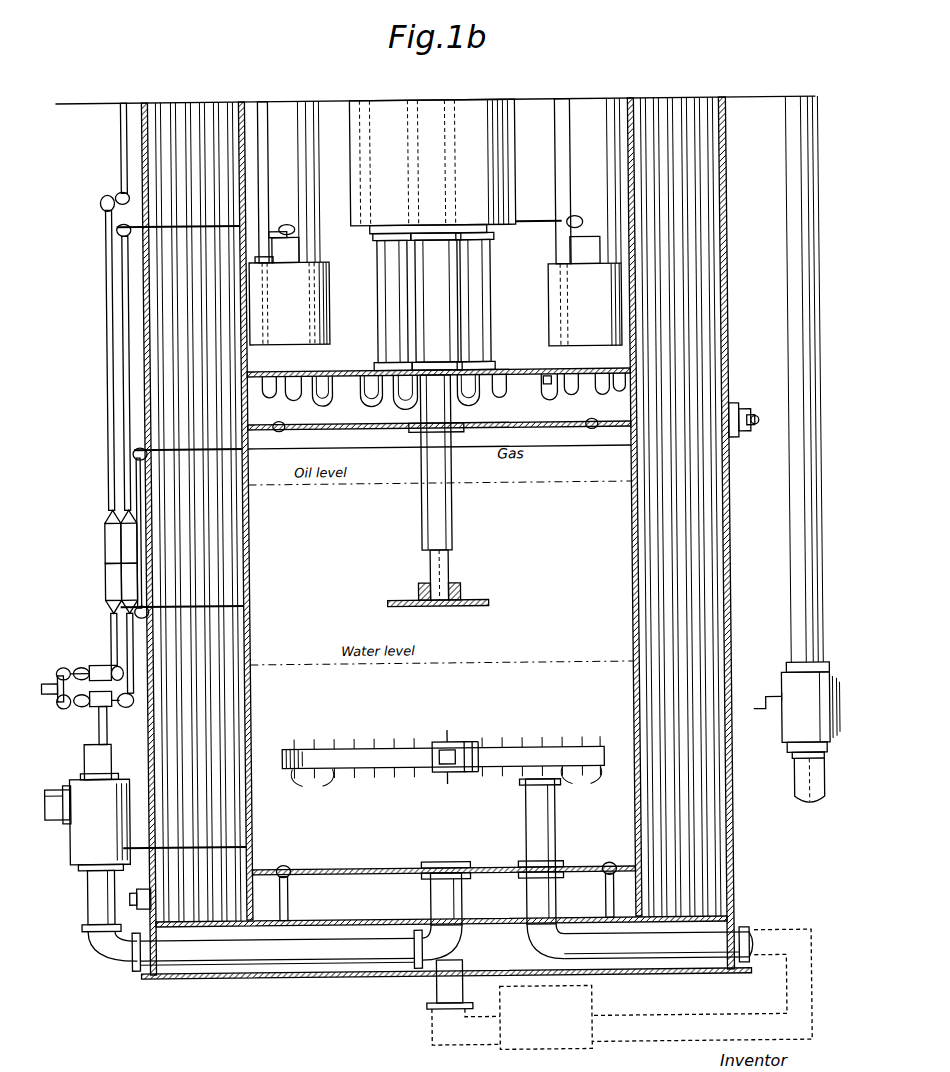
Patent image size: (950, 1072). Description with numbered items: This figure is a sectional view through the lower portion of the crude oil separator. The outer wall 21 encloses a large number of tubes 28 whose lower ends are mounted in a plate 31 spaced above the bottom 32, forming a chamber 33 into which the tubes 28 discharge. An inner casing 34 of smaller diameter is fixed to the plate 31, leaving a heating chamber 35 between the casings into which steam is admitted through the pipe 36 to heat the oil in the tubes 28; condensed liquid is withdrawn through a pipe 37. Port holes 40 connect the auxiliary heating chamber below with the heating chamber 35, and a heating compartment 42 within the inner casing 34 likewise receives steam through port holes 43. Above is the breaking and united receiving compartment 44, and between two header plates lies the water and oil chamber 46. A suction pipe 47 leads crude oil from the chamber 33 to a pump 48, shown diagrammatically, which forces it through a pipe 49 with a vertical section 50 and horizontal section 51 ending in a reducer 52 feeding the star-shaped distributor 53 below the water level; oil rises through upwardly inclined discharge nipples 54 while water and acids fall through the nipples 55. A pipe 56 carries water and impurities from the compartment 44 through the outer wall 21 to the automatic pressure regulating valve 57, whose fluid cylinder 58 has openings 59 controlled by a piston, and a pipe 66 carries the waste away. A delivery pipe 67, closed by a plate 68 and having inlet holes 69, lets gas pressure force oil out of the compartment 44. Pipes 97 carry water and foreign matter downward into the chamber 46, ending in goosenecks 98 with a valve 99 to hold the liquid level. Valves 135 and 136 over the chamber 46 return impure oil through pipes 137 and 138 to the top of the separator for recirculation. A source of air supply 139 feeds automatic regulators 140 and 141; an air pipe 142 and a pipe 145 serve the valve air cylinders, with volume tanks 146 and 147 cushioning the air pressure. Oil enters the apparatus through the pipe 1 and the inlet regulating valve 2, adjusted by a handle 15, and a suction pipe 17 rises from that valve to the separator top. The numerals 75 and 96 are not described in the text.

The pipe 1 is at (800, 785).
The inlet regulating valve 2 is at (790, 732).
The handle 15 is at (758, 708).
The suction pipe 17 is at (790, 530).
The outer wall 21 is at (727, 118).
The tubes 28 is at (665, 200).
The plate 31 is at (345, 918).
The bottom 32 is at (240, 980).
The chamber 33 is at (320, 965).
The inner casing 34 is at (249, 540).
The heating chamber 35 is at (158, 492).
The pipe 36 is at (750, 412).
The pipe 37 is at (130, 896).
The port holes 40 is at (255, 900).
The heating compartment 42 is at (590, 112).
The port holes 43 is at (242, 365).
The breaking and united receiving compartment 44 is at (590, 505).
The water and oil chamber 46 is at (320, 408).
The suction pipe 47 is at (337, 325).
The pump 48 is at (587, 1004).
The pipe 49 is at (745, 935).
The vertical section 50 is at (540, 820).
The horizontal section 51 is at (518, 747).
The reducer 52 is at (495, 747).
The distributor 53 is at (385, 747).
The discharge nipples 54 is at (290, 745).
The nipples 55 is at (305, 775).
The pipe 56 is at (280, 960).
The automatic pressure regulating valve 57 is at (103, 853).
The fluid cylinder 58 is at (320, 868).
The openings 59 is at (480, 890).
The pipe 66 is at (60, 820).
The delivery pipe 67 is at (437, 523).
The plate 68 is at (485, 120).
The inlet holes 69 is at (425, 580).
The partition 75 is at (570, 430).
The U-tube 96 is at (297, 397).
The pipes 97 is at (455, 255).
The goosenecks 98 is at (392, 398).
The valve 99 is at (551, 390).
The valve 135 is at (250, 300).
The valve 136 is at (555, 270).
The pipe 137 is at (272, 118).
The pipe 138 is at (560, 145).
The source of fluid or air supply 139 is at (50, 676).
The automatic regulator 140 is at (95, 660).
The automatic regulator 141 is at (95, 706).
The air pipe 142 is at (108, 618).
The pipe 145 is at (120, 432).
The volume tank 146 is at (105, 582).
The volume tank 147 is at (112, 532).